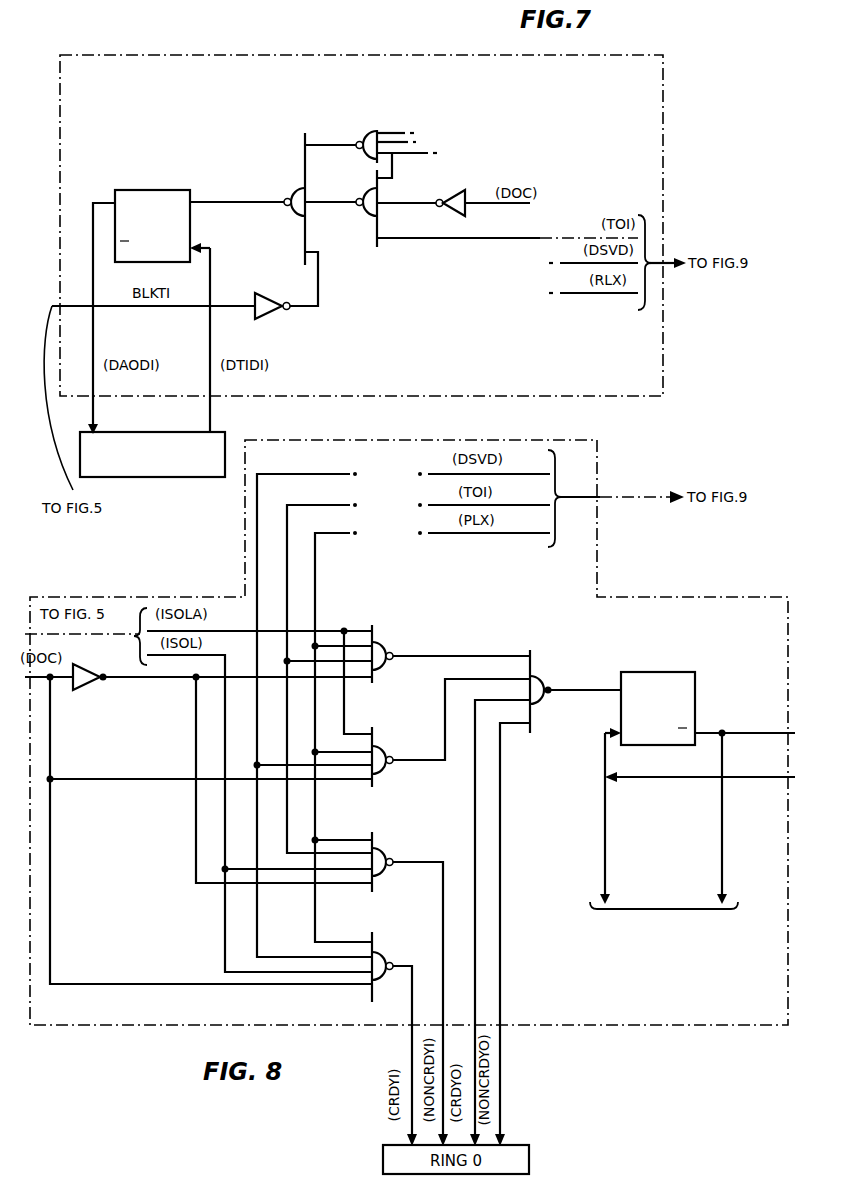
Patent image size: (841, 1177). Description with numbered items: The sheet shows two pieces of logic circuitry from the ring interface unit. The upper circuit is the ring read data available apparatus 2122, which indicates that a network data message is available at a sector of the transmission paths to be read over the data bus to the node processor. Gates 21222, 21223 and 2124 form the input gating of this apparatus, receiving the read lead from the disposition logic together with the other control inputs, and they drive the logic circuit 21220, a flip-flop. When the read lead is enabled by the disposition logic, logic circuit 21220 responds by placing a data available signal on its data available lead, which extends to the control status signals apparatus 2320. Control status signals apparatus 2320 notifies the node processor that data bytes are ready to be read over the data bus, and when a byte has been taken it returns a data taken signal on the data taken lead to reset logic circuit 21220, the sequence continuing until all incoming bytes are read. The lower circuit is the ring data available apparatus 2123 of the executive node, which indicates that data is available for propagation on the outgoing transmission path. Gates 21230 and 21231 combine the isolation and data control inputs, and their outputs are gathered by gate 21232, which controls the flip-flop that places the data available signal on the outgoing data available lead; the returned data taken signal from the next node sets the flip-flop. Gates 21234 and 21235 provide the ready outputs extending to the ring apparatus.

In FIG. 7, the ring read data available apparatus 2122 is at (625, 47).
In FIG. 7, the logic circuit 21220 is at (152, 190).
In FIG. 7, the gate 21222 is at (247, 199).
In FIG. 7, the gate 21223 is at (371, 141).
In FIG. 7, the gate 2124 is at (471, 208).
In FIG. 7, the control status signals apparatus 2320 is at (110, 477).
In FIG. 8, the ring data available apparatus 2123 is at (635, 597).
In FIG. 8, the gate 21230 is at (451, 654).
In FIG. 8, the gate 21231 is at (451, 733).
In FIG. 8, the gate 21232 is at (532, 898).
In FIG. 8, the gate 21234 is at (410, 989).
In FIG. 8, the gate 21235 is at (405, 1039).